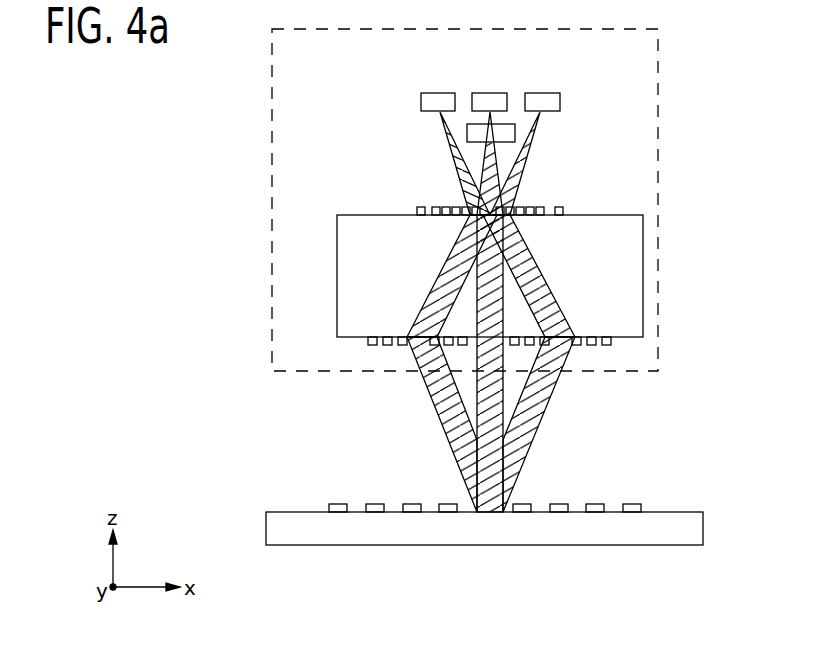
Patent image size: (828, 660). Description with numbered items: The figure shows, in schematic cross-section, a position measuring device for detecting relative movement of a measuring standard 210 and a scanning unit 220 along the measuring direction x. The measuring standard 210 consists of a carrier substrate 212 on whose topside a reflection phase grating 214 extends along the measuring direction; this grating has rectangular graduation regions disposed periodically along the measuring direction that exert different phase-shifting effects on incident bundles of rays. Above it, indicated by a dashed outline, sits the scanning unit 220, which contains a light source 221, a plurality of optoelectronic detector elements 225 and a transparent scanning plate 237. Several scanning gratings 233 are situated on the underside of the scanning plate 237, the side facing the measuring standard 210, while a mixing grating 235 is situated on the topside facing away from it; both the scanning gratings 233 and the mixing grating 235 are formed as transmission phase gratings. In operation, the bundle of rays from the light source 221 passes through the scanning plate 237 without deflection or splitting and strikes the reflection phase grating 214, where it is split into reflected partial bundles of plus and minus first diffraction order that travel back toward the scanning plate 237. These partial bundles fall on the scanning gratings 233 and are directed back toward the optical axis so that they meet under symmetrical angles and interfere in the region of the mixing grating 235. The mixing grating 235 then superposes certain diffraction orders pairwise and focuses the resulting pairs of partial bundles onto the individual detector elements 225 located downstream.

The measuring standard 210 is at (484, 539).
The carrier substrate 212 is at (633, 528).
The reflection phase grating 214 is at (348, 497).
The scanning unit 220 is at (240, 160).
The light source 221 is at (500, 130).
The optoelectronic detector elements 225 is at (537, 101).
The scanning gratings 233 is at (388, 347).
The mixing grating 235 is at (438, 200).
The scanning plate 237 is at (355, 284).